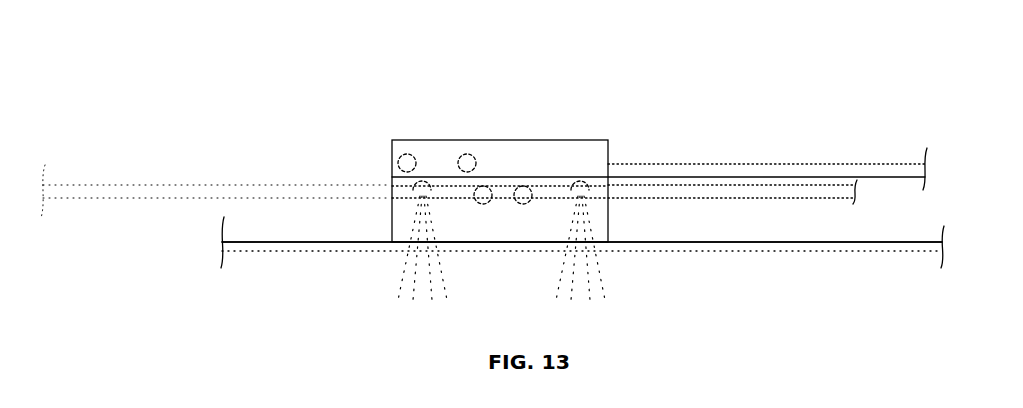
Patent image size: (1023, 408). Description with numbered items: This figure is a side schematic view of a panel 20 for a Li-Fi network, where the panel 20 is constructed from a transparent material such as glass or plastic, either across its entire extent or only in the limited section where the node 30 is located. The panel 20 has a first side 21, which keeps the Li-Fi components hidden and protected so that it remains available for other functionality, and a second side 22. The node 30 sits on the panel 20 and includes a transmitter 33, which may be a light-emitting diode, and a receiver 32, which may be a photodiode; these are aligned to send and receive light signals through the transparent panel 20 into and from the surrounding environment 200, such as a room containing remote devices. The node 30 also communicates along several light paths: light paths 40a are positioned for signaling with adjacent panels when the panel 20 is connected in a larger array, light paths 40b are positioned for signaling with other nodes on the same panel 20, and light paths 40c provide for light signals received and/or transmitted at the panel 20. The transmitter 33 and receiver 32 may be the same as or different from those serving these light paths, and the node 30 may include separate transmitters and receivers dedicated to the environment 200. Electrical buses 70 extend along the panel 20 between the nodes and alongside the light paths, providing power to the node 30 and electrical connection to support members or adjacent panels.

The panel 20 is at (773, 247).
The first side 21 is at (860, 252).
The second surface of base web 22 is at (838, 242).
The node 30 is at (590, 140).
The receiver 32 is at (575, 191).
The transmitter 33 is at (420, 191).
The light paths 40a is at (142, 194).
The light paths 40b is at (762, 167).
The light paths 40c is at (815, 192).
The electrical buses 70 is at (407, 154).
The environment 200 is at (525, 301).